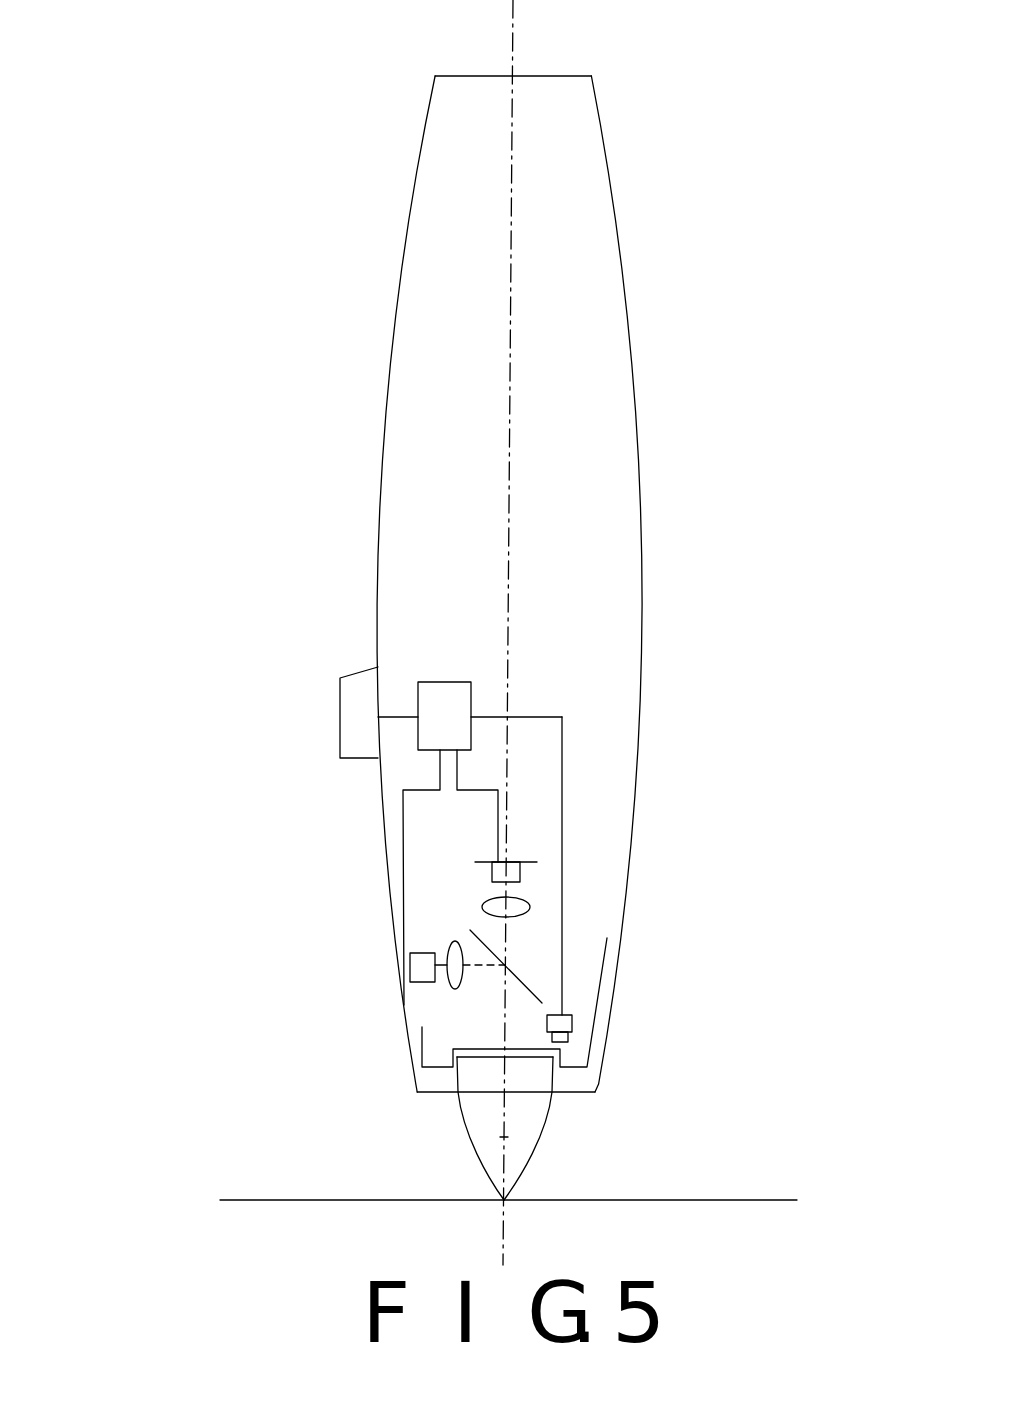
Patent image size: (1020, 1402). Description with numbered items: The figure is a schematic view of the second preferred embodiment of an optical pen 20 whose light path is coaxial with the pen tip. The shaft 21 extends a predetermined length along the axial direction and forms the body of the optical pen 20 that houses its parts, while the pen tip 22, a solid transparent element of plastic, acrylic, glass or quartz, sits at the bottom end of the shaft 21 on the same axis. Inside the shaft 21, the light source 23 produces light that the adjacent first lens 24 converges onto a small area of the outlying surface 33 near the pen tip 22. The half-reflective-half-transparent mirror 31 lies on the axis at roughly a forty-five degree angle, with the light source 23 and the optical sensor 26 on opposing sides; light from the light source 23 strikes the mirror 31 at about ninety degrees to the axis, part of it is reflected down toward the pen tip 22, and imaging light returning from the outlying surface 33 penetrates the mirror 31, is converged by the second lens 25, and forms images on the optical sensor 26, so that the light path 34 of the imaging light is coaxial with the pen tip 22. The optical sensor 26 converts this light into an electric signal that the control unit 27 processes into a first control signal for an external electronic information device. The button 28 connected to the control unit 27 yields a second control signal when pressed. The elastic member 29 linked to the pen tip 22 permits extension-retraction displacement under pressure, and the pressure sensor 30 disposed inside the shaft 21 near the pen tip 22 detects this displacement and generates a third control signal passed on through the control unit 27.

The optical pen 20 is at (198, 820).
The shaft 21 is at (398, 302).
The pen tip 22 is at (470, 1135).
The light source 23 is at (410, 962).
The first lens 24 is at (448, 982).
The second lens 25 is at (530, 905).
The optical sensor 26 is at (520, 871).
The control unit 27 is at (433, 693).
The button 28 is at (358, 710).
The elastic member 29 is at (577, 1070).
The pressure sensor 30 is at (572, 1027).
The half-reflective-half-transparent mirror 31 is at (525, 988).
The outlying surface 33 is at (760, 1198).
The light path 34 is at (505, 1137).